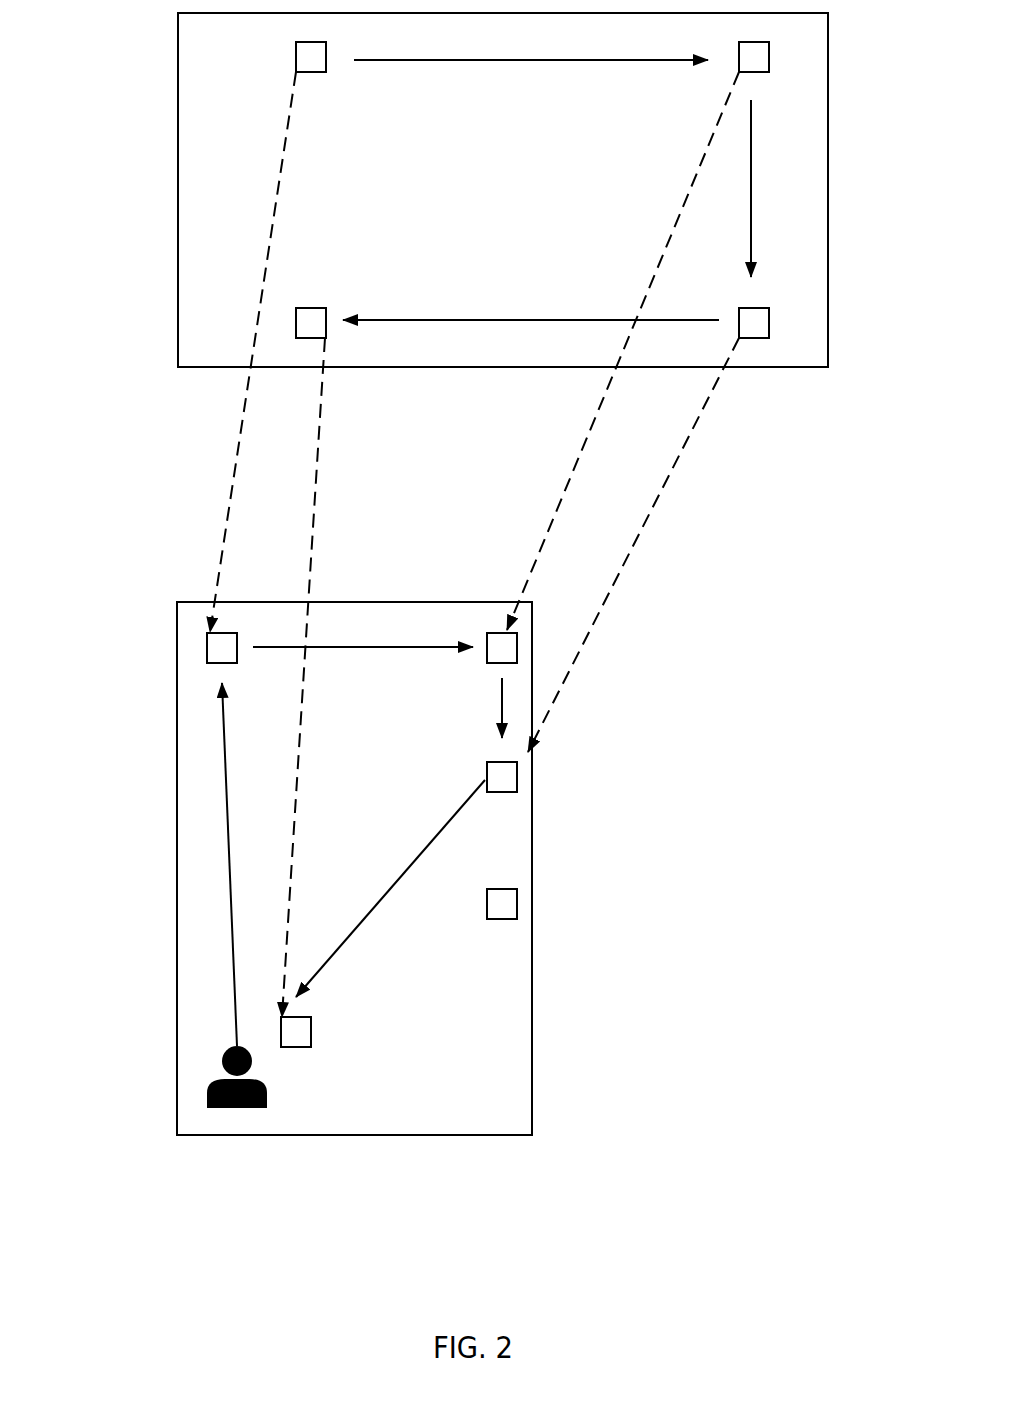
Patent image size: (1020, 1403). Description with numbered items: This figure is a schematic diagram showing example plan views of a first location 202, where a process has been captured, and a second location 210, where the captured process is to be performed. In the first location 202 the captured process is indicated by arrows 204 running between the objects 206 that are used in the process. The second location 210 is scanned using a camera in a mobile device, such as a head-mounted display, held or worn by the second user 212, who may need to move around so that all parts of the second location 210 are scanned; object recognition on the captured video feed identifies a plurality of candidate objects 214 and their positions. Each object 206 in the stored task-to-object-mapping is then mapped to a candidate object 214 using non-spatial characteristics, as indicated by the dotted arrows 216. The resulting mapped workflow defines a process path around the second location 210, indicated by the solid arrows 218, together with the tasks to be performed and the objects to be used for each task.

The first location 202 is at (178, 130).
The arrows 204 is at (751, 183).
The objects 206 is at (769, 333).
The second location 210 is at (177, 785).
The second user 212 is at (207, 1097).
The candidate object 214 is at (517, 778).
The dotted arrows 216 is at (634, 537).
The solid arrows 218 is at (325, 965).